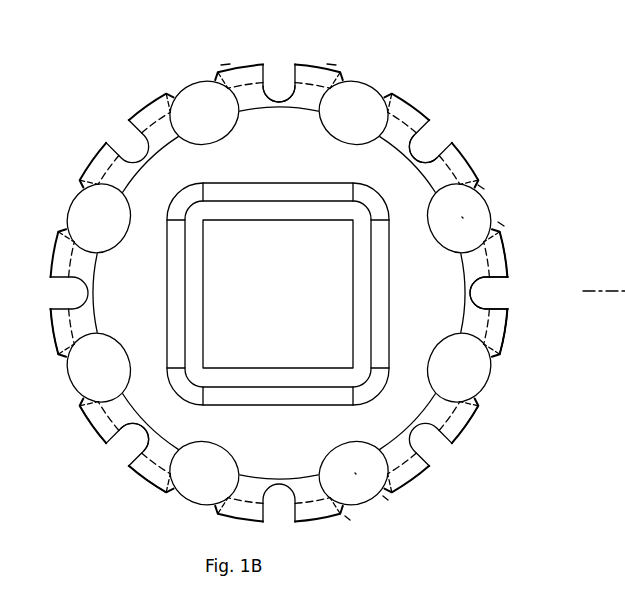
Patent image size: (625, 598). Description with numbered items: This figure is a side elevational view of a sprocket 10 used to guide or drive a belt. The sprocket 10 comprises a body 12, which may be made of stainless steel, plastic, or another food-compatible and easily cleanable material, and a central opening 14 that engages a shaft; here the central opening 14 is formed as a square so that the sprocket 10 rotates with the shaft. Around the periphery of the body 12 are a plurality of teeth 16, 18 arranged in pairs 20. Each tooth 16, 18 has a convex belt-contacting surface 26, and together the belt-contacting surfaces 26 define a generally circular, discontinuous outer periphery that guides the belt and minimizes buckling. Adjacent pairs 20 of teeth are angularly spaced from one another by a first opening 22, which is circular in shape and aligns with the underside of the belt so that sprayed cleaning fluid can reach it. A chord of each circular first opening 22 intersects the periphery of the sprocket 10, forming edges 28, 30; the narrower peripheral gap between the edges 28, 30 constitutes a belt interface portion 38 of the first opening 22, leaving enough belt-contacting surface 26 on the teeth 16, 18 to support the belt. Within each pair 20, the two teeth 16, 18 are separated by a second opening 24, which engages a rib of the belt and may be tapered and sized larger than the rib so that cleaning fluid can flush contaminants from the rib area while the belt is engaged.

The sprocket 10 is at (88, 47).
The body 12 is at (291, 156).
The central opening 14 is at (291, 300).
The tooth 16 is at (228, 63).
The tooth 18 is at (332, 63).
The pair of teeth 20 is at (508, 330).
The first opening 22 is at (360, 104).
The second opening 24 is at (282, 76).
The belt-contacting surface 26 is at (153, 95).
The edge 28 is at (481, 187).
The edge 30 is at (501, 224).
The belt interface portion 38 is at (499, 213).